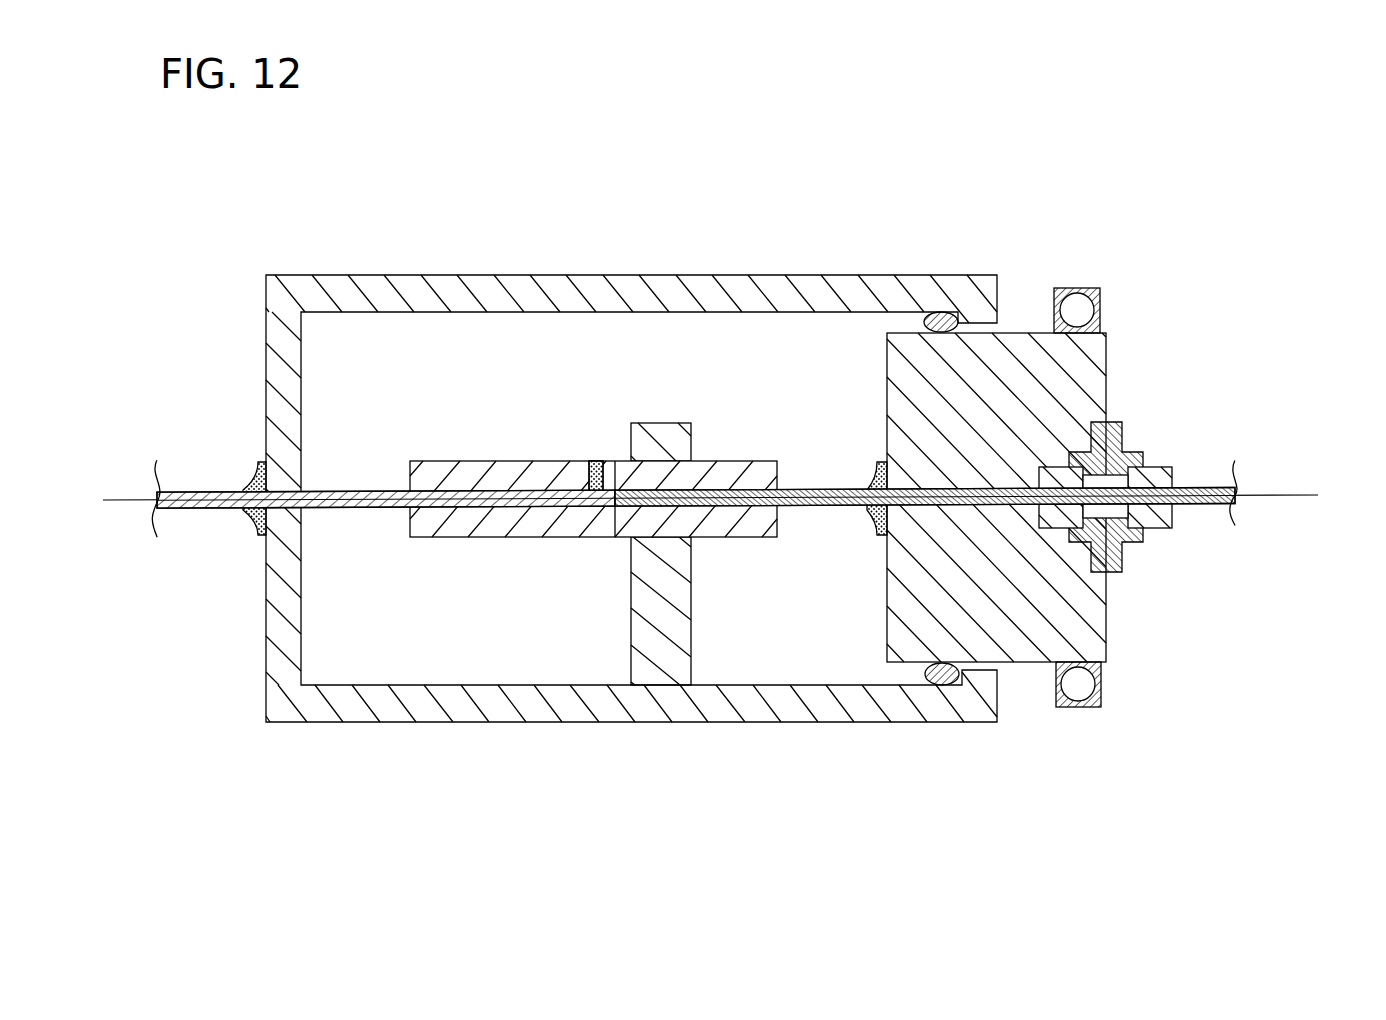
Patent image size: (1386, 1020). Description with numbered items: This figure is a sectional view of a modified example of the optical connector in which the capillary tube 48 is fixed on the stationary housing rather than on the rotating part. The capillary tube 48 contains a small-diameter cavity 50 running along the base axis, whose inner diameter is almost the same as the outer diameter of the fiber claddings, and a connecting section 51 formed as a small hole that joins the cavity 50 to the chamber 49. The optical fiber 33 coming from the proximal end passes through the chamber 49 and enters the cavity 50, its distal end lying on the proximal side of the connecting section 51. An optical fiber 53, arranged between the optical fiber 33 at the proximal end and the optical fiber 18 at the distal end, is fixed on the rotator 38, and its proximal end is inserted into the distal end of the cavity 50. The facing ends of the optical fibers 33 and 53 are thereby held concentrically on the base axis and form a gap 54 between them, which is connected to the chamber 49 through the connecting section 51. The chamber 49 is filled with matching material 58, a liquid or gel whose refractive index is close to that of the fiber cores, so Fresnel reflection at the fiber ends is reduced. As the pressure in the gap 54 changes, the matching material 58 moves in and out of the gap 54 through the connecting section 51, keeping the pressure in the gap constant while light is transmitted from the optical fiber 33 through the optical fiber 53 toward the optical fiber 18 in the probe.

The optical fiber 18 is at (1200, 488).
The optical fiber 33 is at (214, 488).
The rotator 38 is at (1077, 370).
The capillary tube 48 is at (510, 460).
The chamber 49 is at (410, 345).
The cavity 50 is at (460, 506).
The connecting section 51 is at (603, 461).
The optical fiber 53 is at (843, 506).
The gap 54 is at (602, 506).
The matching material 58 is at (631, 437).